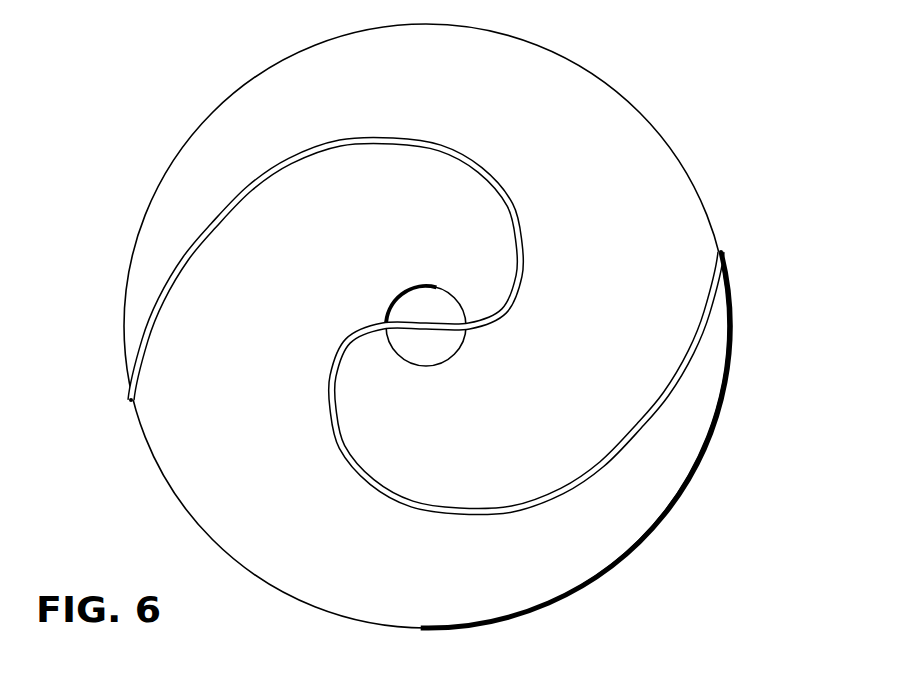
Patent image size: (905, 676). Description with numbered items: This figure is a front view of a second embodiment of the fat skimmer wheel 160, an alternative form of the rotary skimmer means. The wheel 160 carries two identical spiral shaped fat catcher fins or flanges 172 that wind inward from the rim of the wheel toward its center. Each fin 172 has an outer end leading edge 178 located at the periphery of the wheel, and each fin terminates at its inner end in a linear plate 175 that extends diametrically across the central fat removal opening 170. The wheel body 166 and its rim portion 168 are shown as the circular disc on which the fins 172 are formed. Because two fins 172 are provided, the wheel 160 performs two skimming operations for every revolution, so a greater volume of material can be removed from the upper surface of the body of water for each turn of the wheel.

The fat skimmer wheel 160 is at (428, 326).
The disk body 166 is at (707, 418).
The thickened rim portion 168 is at (660, 515).
The fat removal opening 170 is at (438, 352).
The spiral shaped fat catcher fin 172 is at (522, 220).
The linear plate 175 is at (420, 320).
The outer end leading edge 178 is at (131, 400).